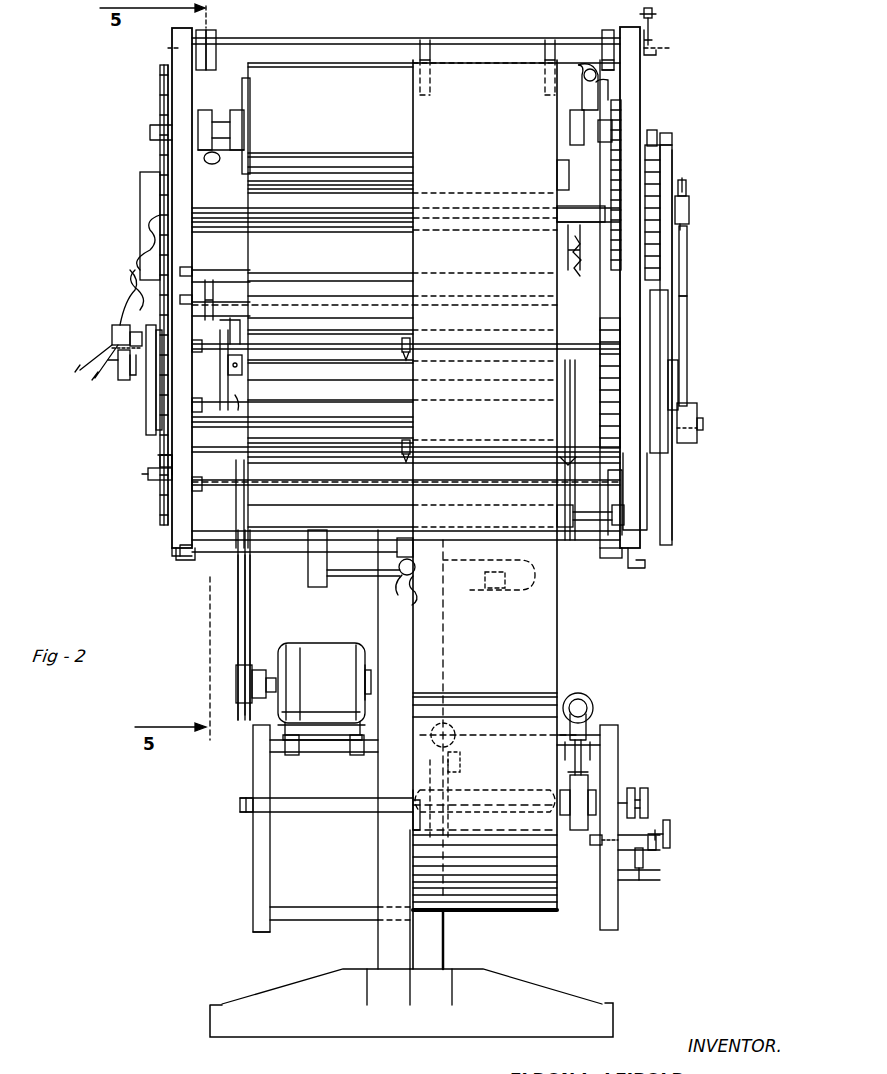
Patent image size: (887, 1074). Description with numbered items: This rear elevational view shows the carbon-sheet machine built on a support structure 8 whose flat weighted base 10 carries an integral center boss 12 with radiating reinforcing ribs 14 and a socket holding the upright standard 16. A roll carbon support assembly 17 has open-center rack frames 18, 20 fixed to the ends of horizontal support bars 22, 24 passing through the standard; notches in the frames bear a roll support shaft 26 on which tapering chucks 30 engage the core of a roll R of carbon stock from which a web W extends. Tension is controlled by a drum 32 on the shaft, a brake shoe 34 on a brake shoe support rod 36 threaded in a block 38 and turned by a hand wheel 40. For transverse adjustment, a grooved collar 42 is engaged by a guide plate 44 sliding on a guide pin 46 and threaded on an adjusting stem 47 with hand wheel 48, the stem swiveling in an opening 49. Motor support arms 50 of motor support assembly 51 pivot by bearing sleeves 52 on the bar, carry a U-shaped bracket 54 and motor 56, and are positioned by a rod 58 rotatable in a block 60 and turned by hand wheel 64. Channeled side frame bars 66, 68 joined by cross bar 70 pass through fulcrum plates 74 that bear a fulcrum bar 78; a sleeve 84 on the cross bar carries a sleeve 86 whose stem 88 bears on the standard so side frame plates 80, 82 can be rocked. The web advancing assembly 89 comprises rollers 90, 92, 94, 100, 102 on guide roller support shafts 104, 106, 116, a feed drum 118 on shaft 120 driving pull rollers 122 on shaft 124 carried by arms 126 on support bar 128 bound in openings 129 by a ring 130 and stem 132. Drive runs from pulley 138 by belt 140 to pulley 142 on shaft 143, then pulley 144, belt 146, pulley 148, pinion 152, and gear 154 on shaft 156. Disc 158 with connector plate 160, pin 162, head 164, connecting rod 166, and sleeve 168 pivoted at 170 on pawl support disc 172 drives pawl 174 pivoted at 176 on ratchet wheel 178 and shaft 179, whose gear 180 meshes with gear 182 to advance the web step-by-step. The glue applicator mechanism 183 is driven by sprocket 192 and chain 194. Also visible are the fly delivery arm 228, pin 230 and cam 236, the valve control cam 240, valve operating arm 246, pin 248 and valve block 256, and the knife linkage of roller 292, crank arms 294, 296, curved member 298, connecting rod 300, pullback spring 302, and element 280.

The support structure 8 is at (283, 1032).
The base 10 is at (208, 1006).
The center boss 12 is at (430, 969).
The reinforcing ribs 14 is at (282, 985).
The standard 16 is at (378, 850).
The roll carbon support assembly 17 is at (248, 834).
The rack frame 18 is at (620, 758).
The rack frame 20 is at (253, 855).
The horizontal support bar 22 is at (296, 906).
The horizontal support bar 24 is at (253, 760).
The roll support shaft 26 is at (326, 798).
The chucks 30 is at (410, 826).
The drum 32 is at (568, 790).
The brake shoe 34 is at (560, 750).
The brake shoe support rod 36 is at (580, 752).
The block 38 is at (590, 718).
The hand wheel 40 is at (592, 702).
The peripherally grooved collar 42 is at (648, 792).
The guide plate 44 is at (638, 882).
The guide pin 46 is at (618, 880).
The adjusting stem 47 is at (658, 852).
The hand wheel 48 is at (672, 826).
The opening 49 is at (603, 848).
The motor support arms 50 is at (323, 735).
The motor support assembly 51 is at (304, 735).
The bearing sleeves 52 is at (292, 756).
The motor support bracket 54 is at (370, 660).
The motor 56 is at (310, 645).
The bracket support and positioning rod 58 is at (462, 786).
The block 60 is at (465, 856).
The hand wheel 64 is at (448, 725).
The side frame bar 66 is at (636, 570).
The side frame bar 68 is at (178, 560).
The cross bar 70 is at (600, 555).
The fulcrum plates 74 is at (306, 562).
The fulcrum bar 78 is at (340, 576).
The side frame plate 80 is at (648, 484).
The side frame plate 82 is at (176, 520).
The sleeve 84 is at (395, 552).
The sleeve 86 is at (400, 586).
The stem 88 is at (420, 592).
The web advancing assembly 89 is at (384, 78).
The roller 90 is at (335, 507).
The roller 92 is at (345, 400).
The roller 94 is at (372, 418).
The roller 100 is at (292, 312).
The roller 102 is at (376, 288).
The guide roller support shaft 104 is at (222, 518).
The guide roller support shaft 106 is at (250, 400).
The guide roller support shaft 116 is at (216, 276).
The feed drum 118 is at (346, 110).
The feed drum support shaft 120 is at (216, 122).
The pull rollers 122 is at (428, 45).
The shaft 124 is at (250, 62).
The arms 126 is at (210, 48).
The pull roller support bar 128 is at (357, 38).
The openings 129 is at (140, 52).
The ring 130 is at (660, 30).
The stem 132 is at (652, 12).
The drive pulley 138 is at (240, 692).
The belt 140 is at (240, 642).
The pulley 142 is at (240, 576).
The shaft 143 is at (620, 510).
The pulley 144 is at (605, 528).
The belt 146 is at (620, 480).
The pulley 148 is at (562, 470).
The pinion 152 is at (640, 460).
The gear 154 is at (622, 360).
The shaft 156 is at (315, 365).
The disc 158 is at (668, 300).
The connector plate 160 is at (680, 378).
The pin 162 is at (703, 425).
The head 164 is at (698, 410).
The connecting rod 166 is at (690, 352).
The sleeve 168 is at (690, 234).
The pivot 170 is at (690, 208).
The pawl support disc 172 is at (672, 168).
The pawl 174 is at (652, 140).
The pivot 176 is at (674, 135).
The ratchet wheel 178 is at (672, 150).
The shaft 179 is at (568, 208).
The gear 180 is at (612, 190).
The gear 182 is at (608, 90).
The glue applicator mechanism 183 is at (392, 345).
The sprocket 192 is at (160, 88).
The chain 194 is at (160, 155).
The arm 228 is at (160, 460).
The pin 230 is at (145, 476).
The cam 236 is at (148, 405).
The valve control cam 240 is at (126, 380).
The valve operating arm 246 is at (110, 325).
The pin 248 is at (112, 335).
The valve block 256 is at (140, 188).
The bracket 280 is at (226, 388).
The roller 292 is at (248, 341).
The crank arm 294 is at (258, 282).
The crank arm 296 is at (570, 260).
The curved member 298 is at (560, 236).
The connecting rod 300 is at (560, 175).
The pullback spring 302 is at (565, 272).
The roll R is at (498, 700).
The web W is at (558, 652).